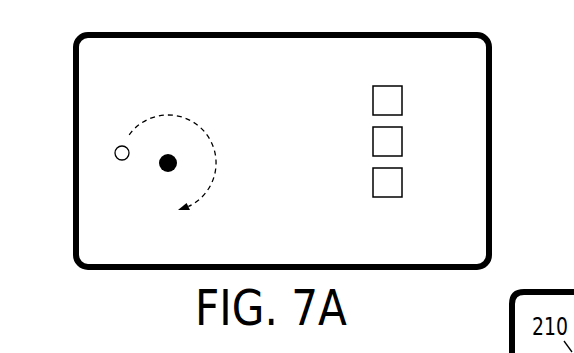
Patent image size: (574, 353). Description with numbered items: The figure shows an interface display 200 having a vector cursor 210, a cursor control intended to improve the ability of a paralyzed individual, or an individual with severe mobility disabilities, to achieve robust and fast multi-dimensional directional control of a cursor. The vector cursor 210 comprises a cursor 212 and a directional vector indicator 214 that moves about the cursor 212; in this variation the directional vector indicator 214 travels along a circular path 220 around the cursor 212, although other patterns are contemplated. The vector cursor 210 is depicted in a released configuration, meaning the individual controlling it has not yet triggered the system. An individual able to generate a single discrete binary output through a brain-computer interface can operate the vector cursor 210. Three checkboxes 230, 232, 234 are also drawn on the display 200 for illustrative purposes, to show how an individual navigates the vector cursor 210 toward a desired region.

The interface display 200 is at (136, 278).
The vector cursor 210 is at (138, 104).
The cursor 212 is at (160, 166).
The directional vector indicator 214 is at (117, 149).
The circular path 220 is at (212, 127).
The checkbox 230 is at (402, 106).
The checkbox 232 is at (402, 150).
The checkbox 234 is at (402, 189).